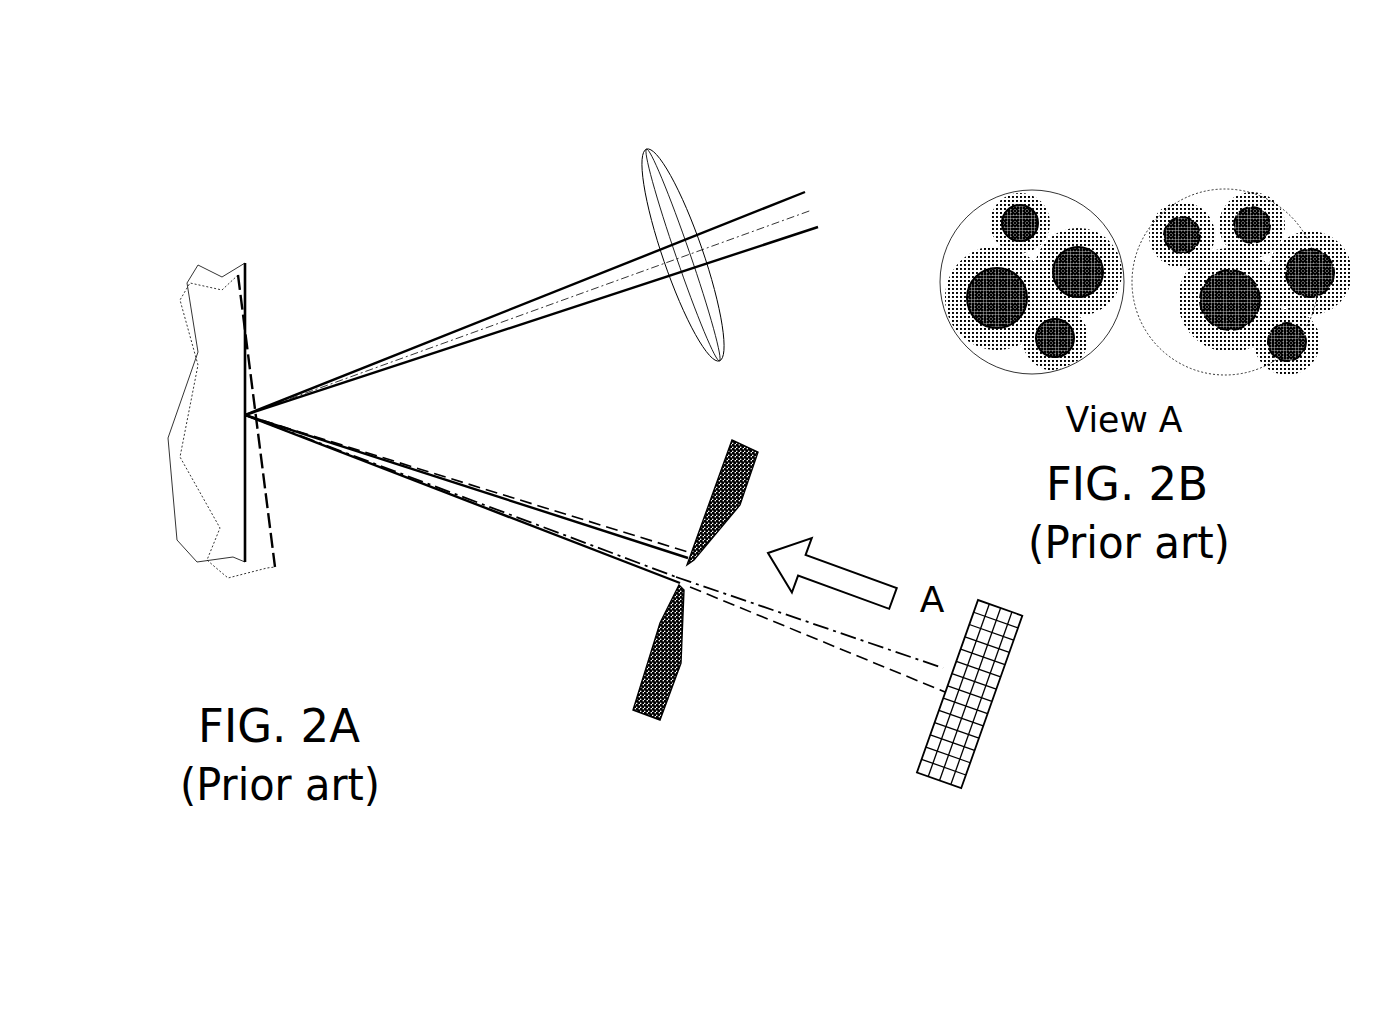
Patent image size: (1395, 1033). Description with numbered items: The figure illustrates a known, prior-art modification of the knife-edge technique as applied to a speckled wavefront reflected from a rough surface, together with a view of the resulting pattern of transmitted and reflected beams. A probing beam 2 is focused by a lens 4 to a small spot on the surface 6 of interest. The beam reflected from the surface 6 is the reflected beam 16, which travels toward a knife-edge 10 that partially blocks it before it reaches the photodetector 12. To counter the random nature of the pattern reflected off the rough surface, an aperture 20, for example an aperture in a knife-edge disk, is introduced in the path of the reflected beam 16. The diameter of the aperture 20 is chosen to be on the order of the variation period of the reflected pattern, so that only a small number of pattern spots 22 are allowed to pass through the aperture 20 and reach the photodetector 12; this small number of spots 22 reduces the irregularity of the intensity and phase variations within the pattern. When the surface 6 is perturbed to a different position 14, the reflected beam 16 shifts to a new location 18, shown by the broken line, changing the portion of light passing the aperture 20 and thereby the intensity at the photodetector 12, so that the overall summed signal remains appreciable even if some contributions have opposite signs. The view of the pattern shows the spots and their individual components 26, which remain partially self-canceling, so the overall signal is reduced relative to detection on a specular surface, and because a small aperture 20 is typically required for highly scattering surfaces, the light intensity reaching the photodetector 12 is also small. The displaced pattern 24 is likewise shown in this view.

In FIG. 2A, the probing beam 2 is at (548, 290).
In FIG. 2A, the lens 4 is at (646, 151).
In FIG. 2A, the surface 6 is at (246, 276).
In FIG. 2A, the knife-edge 10 is at (752, 479).
In FIG. 2A, the photodetector 12 is at (930, 731).
In FIG. 2A, the new location of surface 14 is at (275, 567).
In FIG. 2A, the reflected beam 16 is at (563, 537).
In FIG. 2A, the new location of reflected beam 18 is at (560, 506).
In FIG. 2A, the aperture 20 is at (688, 584).
In FIG. 2B, the pattern spots 22 is at (995, 193).
In FIG. 2B, the displaced beam spot 24 is at (1205, 192).
In FIG. 2B, the components 26 is at (1033, 200).